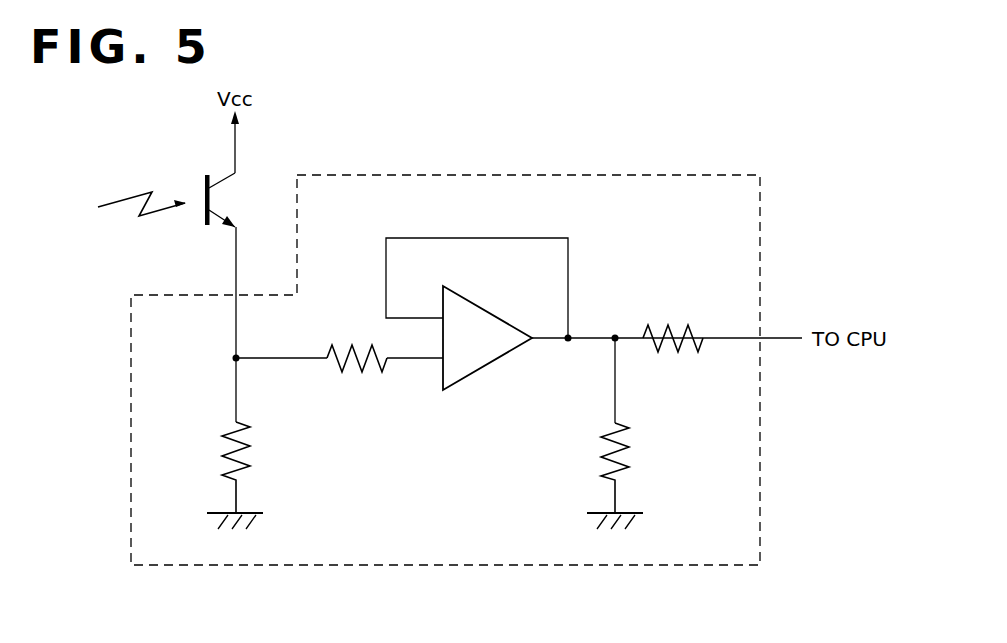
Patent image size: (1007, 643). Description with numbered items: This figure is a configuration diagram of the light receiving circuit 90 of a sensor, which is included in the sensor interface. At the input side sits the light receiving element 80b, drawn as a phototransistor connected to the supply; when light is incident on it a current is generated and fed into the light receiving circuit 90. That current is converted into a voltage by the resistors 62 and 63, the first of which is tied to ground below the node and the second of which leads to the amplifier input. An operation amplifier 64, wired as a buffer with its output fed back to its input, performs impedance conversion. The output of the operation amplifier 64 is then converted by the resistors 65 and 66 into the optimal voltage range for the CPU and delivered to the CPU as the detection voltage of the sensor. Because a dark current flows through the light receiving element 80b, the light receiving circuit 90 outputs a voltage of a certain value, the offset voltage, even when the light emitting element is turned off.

The light receiving circuit 90 is at (459, 172).
The light receiving element 80b is at (195, 178).
The resistor 62 is at (214, 467).
The resistor 63 is at (350, 377).
The operation amplifier 64 is at (463, 379).
The resistor 65 is at (632, 457).
The resistor 66 is at (677, 325).